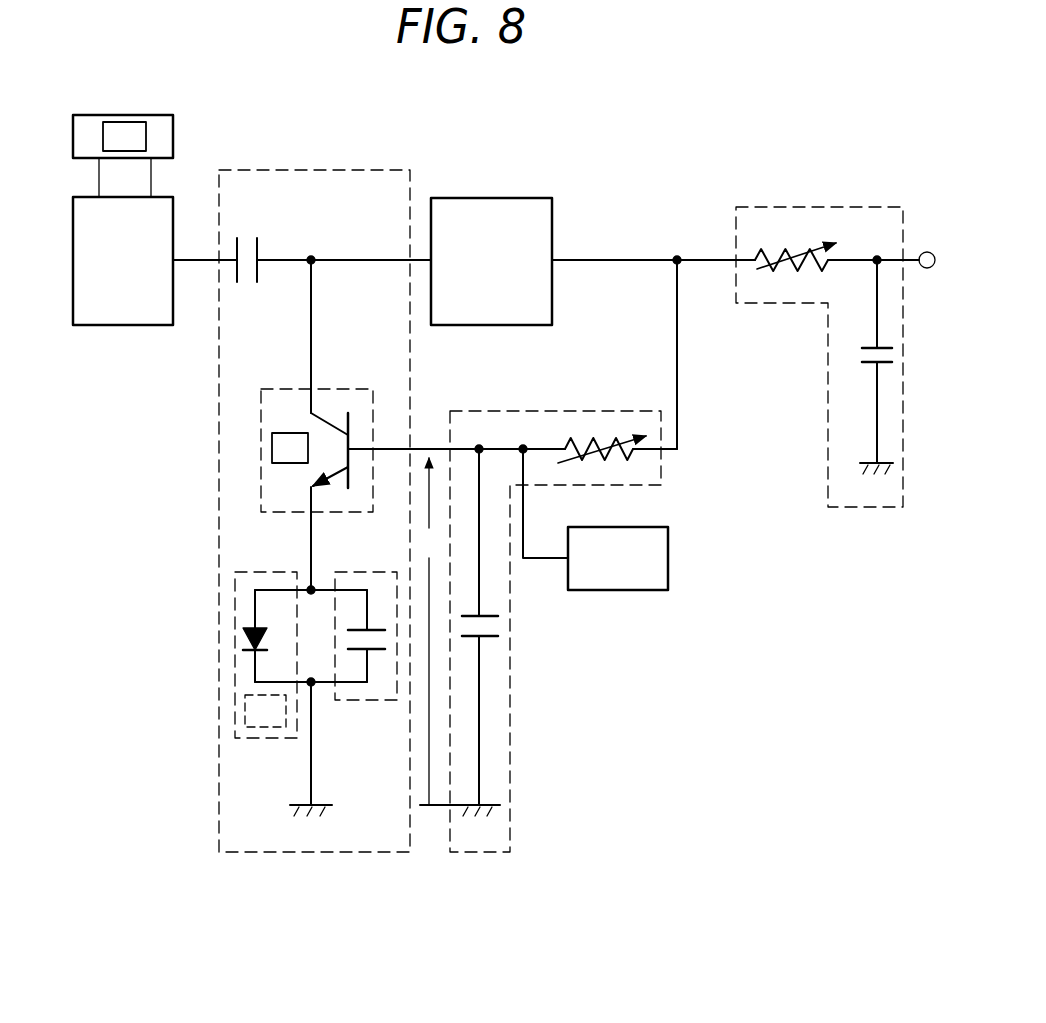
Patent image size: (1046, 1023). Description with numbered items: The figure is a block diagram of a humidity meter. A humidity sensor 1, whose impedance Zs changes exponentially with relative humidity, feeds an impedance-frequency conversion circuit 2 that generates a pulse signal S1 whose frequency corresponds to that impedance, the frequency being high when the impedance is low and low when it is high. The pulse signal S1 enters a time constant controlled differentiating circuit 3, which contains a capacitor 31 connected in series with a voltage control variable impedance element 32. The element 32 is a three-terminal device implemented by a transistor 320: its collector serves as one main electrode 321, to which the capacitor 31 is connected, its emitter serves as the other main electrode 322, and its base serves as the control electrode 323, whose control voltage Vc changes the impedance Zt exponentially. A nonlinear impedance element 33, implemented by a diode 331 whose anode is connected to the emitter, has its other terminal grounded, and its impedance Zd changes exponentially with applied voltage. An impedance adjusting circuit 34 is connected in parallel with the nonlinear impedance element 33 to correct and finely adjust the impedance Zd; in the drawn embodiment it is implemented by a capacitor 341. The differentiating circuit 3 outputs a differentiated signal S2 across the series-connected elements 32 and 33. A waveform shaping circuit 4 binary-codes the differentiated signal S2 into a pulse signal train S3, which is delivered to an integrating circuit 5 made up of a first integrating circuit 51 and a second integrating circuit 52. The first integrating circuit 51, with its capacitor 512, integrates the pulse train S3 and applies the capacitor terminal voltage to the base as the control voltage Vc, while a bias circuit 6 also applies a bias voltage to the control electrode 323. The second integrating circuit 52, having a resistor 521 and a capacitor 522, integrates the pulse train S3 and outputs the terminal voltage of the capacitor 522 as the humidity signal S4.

The humidity sensor 1 is at (153, 116).
The impedance-frequency conversion circuit 2 is at (138, 325).
The time constant controlled differentiating circuit 3 is at (304, 170).
The capacitor 31 is at (258, 247).
The voltage control variable impedance element 32 is at (261, 462).
The transistor 320 is at (340, 401).
The main electrode 321 is at (314, 389).
The main electrode 322 is at (312, 512).
The control electrode 323 is at (374, 449).
The nonlinear impedance element 33 is at (235, 603).
The diode 331 is at (243, 640).
The impedance adjusting circuit 34 is at (352, 700).
The capacitor 341 is at (378, 650).
The waveform shaping circuit 4 is at (507, 198).
The integrating circuit 5 is at (754, 146).
The first integrating circuit 51 is at (558, 399).
The capacitor 512 is at (499, 628).
The second integrating circuit 52 is at (750, 207).
The resistor 521 is at (600, 440).
The capacitor 522 is at (857, 362).
The bias circuit 6 is at (648, 527).
The pulse signal S1 is at (194, 260).
The differentiated signal S2 is at (368, 260).
The pulse signal train S3 is at (598, 260).
The humidity signal S4 is at (885, 260).
The control voltage Vc is at (459, 631).